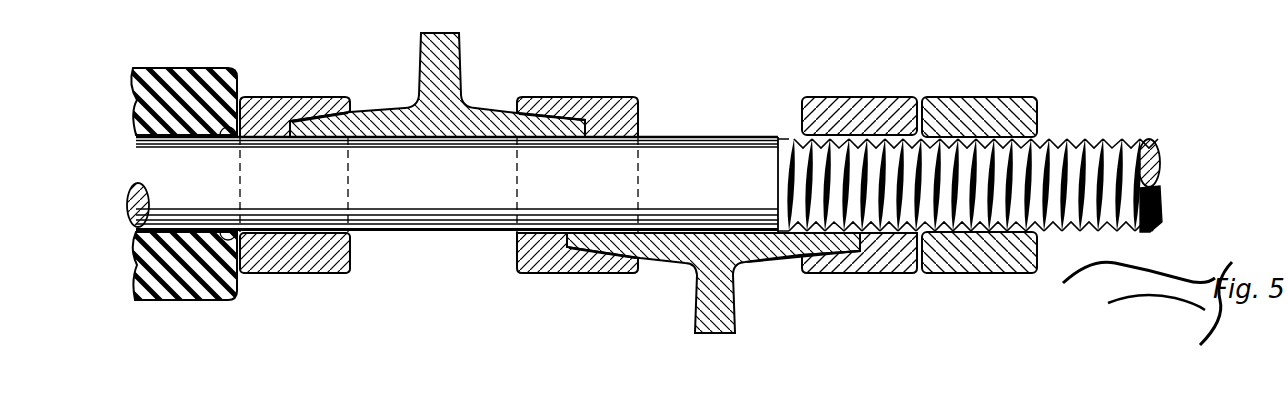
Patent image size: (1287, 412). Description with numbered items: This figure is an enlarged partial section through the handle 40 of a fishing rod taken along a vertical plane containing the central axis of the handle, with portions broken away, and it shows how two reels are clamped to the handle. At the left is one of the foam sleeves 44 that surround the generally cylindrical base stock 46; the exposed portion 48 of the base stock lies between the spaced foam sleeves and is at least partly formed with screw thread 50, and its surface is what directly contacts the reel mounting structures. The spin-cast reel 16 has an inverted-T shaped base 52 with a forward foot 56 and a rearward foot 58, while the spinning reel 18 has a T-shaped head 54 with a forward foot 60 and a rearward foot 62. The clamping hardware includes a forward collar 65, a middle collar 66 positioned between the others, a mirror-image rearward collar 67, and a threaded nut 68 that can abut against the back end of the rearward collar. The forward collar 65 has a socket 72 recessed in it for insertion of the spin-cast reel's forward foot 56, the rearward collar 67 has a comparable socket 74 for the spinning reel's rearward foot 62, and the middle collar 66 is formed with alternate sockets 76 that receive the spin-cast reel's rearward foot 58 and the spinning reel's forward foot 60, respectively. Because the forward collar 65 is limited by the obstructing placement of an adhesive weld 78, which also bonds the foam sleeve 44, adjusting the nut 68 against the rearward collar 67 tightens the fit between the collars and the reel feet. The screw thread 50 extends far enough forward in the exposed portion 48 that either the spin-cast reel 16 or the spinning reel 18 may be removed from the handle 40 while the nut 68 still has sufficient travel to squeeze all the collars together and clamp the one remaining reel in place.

The spin-cast reel 16 is at (449, 33).
The spinning reel 18 is at (735, 333).
The handle 40 is at (1121, 96).
The foam sleeve 44 is at (186, 68).
The cylindrical base stock 46 is at (163, 192).
The exposed portion 48 is at (713, 137).
The screw thread 50 is at (1082, 137).
The inverted-T shaped base 52 is at (437, 95).
The T-shaped head 54 is at (680, 207).
The forward foot 56 is at (325, 130).
The rearward foot 58 is at (538, 130).
The forward foot 60 is at (662, 247).
The rearward foot 62 is at (773, 247).
The forward collar 65 is at (278, 97).
The middle collar 66 is at (593, 98).
The rearward collar 67 is at (868, 112).
The threaded nut 68 is at (985, 112).
The socket 72 is at (356, 112).
The socket 74 is at (775, 258).
The alternate sockets 76 is at (518, 116).
The adhesive weld 78 is at (170, 133).